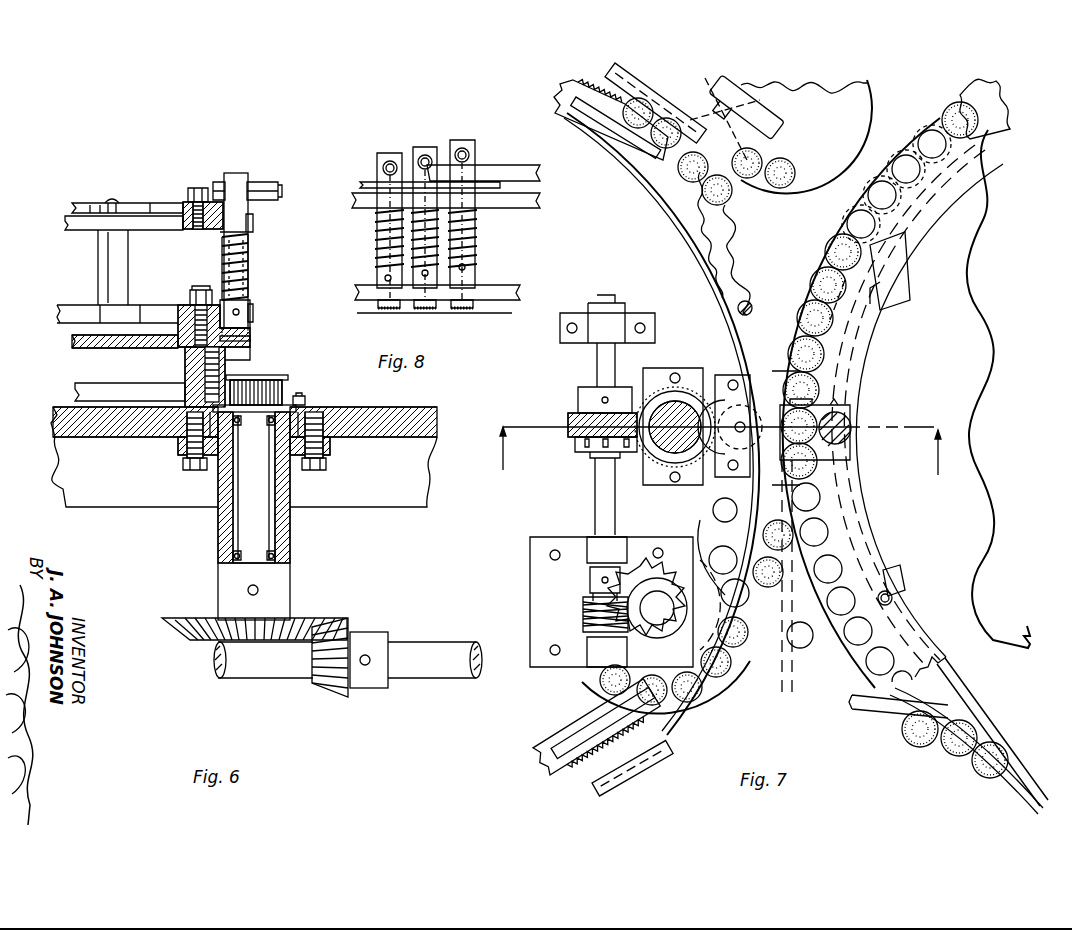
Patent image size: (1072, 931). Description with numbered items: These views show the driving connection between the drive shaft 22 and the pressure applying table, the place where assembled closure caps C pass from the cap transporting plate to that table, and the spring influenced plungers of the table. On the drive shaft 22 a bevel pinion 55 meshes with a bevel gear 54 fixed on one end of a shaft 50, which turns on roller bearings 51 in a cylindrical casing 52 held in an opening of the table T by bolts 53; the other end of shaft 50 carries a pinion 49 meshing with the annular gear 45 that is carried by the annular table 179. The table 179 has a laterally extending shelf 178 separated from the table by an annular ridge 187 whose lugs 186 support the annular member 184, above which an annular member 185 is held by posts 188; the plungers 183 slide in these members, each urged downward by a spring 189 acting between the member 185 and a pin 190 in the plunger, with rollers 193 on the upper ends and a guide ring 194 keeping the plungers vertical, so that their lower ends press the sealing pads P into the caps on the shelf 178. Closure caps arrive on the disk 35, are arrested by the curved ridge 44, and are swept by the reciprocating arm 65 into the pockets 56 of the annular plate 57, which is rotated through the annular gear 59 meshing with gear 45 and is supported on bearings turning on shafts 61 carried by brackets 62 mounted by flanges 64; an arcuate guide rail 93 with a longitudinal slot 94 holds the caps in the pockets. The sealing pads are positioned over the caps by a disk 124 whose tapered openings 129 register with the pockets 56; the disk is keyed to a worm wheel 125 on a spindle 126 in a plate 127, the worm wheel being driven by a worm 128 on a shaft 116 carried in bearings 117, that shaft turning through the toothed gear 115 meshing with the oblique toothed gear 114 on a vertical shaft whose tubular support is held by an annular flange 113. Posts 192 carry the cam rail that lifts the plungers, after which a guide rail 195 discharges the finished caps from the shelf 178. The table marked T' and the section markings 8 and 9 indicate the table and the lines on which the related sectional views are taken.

In FIG. 6, the guide ring 194 is at (167, 203).
In FIG. 8, the guide ring 194 is at (362, 185).
In FIG. 6, the posts 188 is at (120, 268).
In FIG. 7, the posts 188 is at (852, 422).
In FIG. 6, the rollers 193 is at (258, 182).
In FIG. 6, the plungers 183 is at (250, 270).
In FIG. 8, the plungers 183 is at (376, 166).
In FIG. 6, the annular member 185 is at (254, 222).
In FIG. 8, the annular member 185 is at (518, 200).
In FIG. 6, the spring 189 is at (250, 252).
In FIG. 8, the spring 189 is at (390, 236).
In FIG. 6, the pin 190 is at (252, 302).
In FIG. 8, the pin 190 is at (384, 279).
In FIG. 6, the annular member 184 is at (253, 314).
In FIG. 8, the annular member 184 is at (520, 292).
In FIG. 7, the annular member 184 is at (937, 188).
In FIG. 6, the closure caps C is at (250, 330).
In FIG. 8, the closure caps C is at (452, 315).
In FIG. 7, the closure caps C is at (782, 160).
In FIG. 6, the sealing pad P is at (252, 338).
In FIG. 7, the sealing pad P is at (658, 670).
In FIG. 6, the annular table 179 is at (72, 348).
In FIG. 7, the annular table 179 is at (1003, 372).
In FIG. 6, the shelf 178 is at (240, 350).
In FIG. 7, the shelf 178 is at (1015, 780).
In FIG. 6, the annular gear 45 is at (130, 395).
In FIG. 7, the annular gear 45 is at (1005, 118).
In FIG. 6, the pinion 49 is at (283, 380).
In FIG. 6, the turret table T' is at (258, 445).
In FIG. 6, the bolts 53 is at (183, 450).
In FIG. 6, the cylindrical casing 52 is at (291, 530).
In FIG. 6, the shaft 50 is at (256, 487).
In FIG. 6, the roller bearings 51 is at (305, 397).
In FIG. 6, the bevel gear 54 is at (302, 630).
In FIG. 6, the bevel pinion 55 is at (333, 690).
In FIG. 6, the drive shaft 22 is at (414, 645).
In FIG. 8, the bearings 117 is at (557, 337).
In FIG. 7, the bearings 117 is at (600, 332).
In FIG. 7, the table T is at (661, 424).
In FIG. 7, the annular plate 57 is at (700, 208).
In FIG. 7, the recesses or pockets 56 is at (762, 288).
In FIG. 7, the disk 35 is at (855, 100).
In FIG. 7, the reciprocating arm 65 is at (767, 118).
In FIG. 7, the curved ridge 44 is at (705, 90).
In FIG. 7, the arcuate guide rail 93 is at (638, 74).
In FIG. 7, the longitudinal slot 94 is at (600, 80).
In FIG. 7, the annular gear 59 is at (563, 110).
In FIG. 7, the lugs 186 is at (895, 274).
In FIG. 7, the annular ridge 187 is at (848, 296).
In FIG. 7, the guide rail 195 is at (866, 700).
In FIG. 7, the section line 9 is at (719, 462).
In FIG. 7, the oblique toothed gear 114 is at (680, 395).
In FIG. 7, the annular flange 113 is at (652, 374).
In FIG. 7, the toothed gear 115 is at (576, 412).
In FIG. 7, the shaft 116 is at (603, 497).
In FIG. 7, the flanges 64 is at (725, 375).
In FIG. 7, the shaft 61 is at (752, 410).
In FIG. 7, the section line 8 is at (778, 428).
In FIG. 7, the right angle bracket 62 is at (723, 486).
In FIG. 7, the posts 192 is at (716, 506).
In FIG. 7, the disk 124 is at (702, 525).
In FIG. 7, the plate 127 is at (533, 605).
In FIG. 7, the worm 128 is at (583, 615).
In FIG. 7, the spindle 126 is at (660, 612).
In FIG. 7, the worm wheel 125 is at (645, 590).
In FIG. 7, the openings or orifices 129 is at (735, 593).